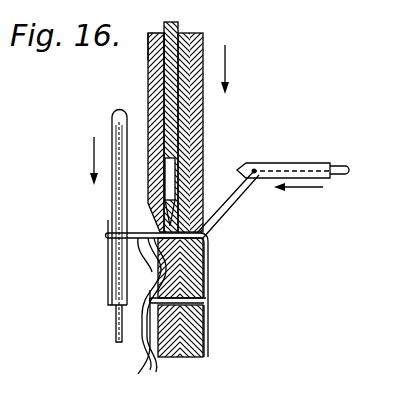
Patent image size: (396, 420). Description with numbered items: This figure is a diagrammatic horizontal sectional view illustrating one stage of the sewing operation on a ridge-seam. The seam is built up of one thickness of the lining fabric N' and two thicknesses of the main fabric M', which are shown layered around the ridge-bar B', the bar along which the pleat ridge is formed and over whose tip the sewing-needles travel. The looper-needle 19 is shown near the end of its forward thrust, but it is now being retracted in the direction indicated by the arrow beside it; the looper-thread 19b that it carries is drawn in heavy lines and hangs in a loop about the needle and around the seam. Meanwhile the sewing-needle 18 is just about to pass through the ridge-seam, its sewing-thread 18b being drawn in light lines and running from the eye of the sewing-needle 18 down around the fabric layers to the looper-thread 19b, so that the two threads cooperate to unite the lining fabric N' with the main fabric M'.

The looper-needle 19 is at (111, 125).
The looper-thread 19b is at (118, 334).
The sewing-needle 18 is at (285, 162).
The sewing-thread 18b is at (233, 200).
The main fabric M' is at (135, 58).
The lining fabric N' is at (198, 195).
The ridge-bar B' is at (195, 211).